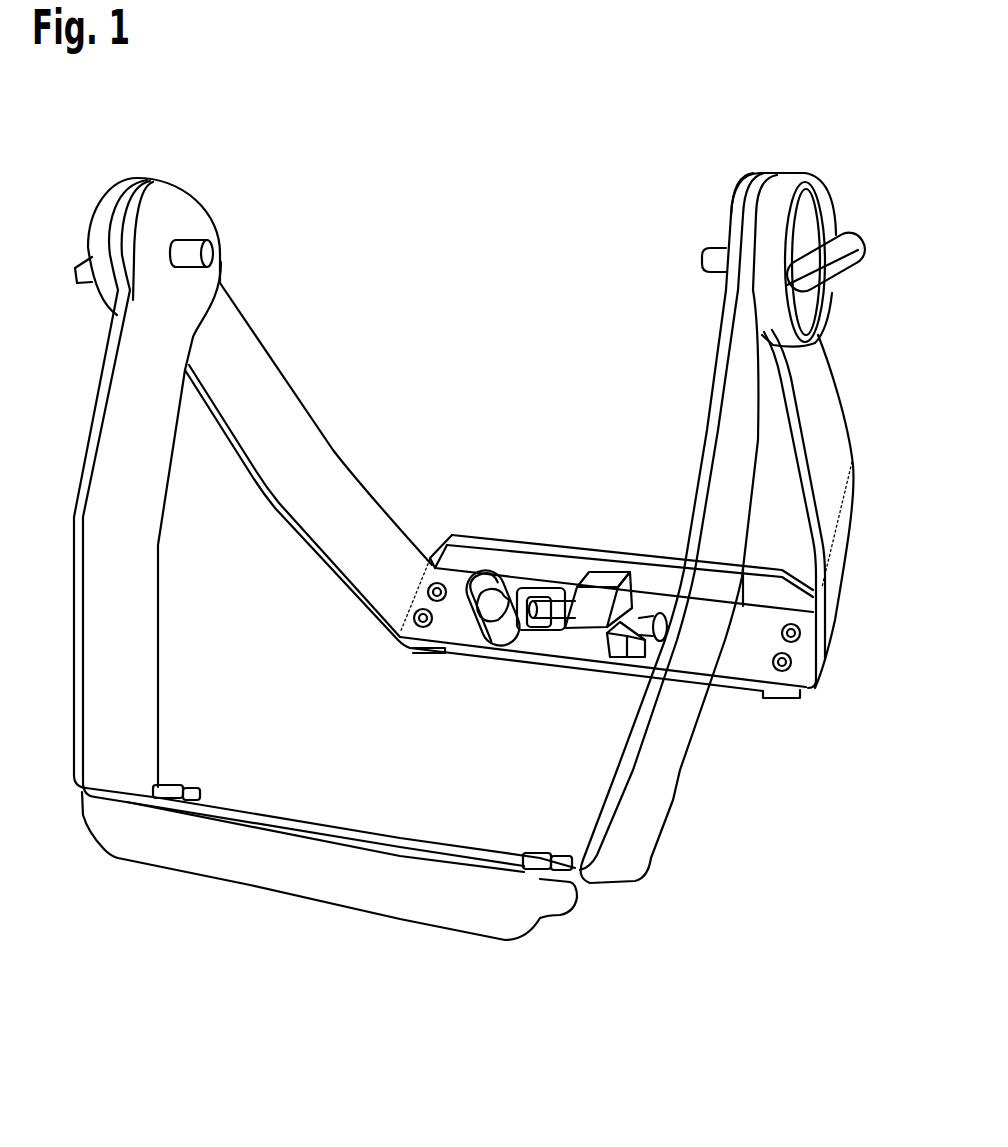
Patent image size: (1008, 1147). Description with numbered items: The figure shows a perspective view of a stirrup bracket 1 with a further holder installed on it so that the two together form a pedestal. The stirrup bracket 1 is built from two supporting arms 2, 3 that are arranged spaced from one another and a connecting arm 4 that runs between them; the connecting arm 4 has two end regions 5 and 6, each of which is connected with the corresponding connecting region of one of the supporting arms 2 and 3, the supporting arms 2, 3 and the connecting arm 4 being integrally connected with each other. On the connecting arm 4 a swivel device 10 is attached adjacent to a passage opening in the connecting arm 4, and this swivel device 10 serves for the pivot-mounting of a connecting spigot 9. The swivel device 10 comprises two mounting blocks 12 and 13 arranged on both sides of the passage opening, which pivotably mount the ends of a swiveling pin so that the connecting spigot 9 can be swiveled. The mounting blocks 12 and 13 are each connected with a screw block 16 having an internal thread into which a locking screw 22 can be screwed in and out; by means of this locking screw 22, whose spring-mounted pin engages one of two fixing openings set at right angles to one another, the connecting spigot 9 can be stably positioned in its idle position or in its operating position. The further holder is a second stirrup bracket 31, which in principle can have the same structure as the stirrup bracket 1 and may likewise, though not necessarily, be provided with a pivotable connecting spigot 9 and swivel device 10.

The stirrup bracket 1 is at (452, 314).
The supporting arm 2 is at (273, 394).
The supporting arm 3 is at (823, 396).
The connecting arm 4 is at (540, 682).
The end region 5 is at (408, 642).
The end region 6 is at (797, 677).
The connecting spigot 9 is at (535, 637).
The swivel device 10 is at (581, 573).
The mounting block 12 is at (614, 583).
The mounting block 13 is at (585, 632).
The screw block 16 is at (618, 622).
The locking screw 22 is at (655, 611).
The second stirrup bracket 31 is at (673, 866).